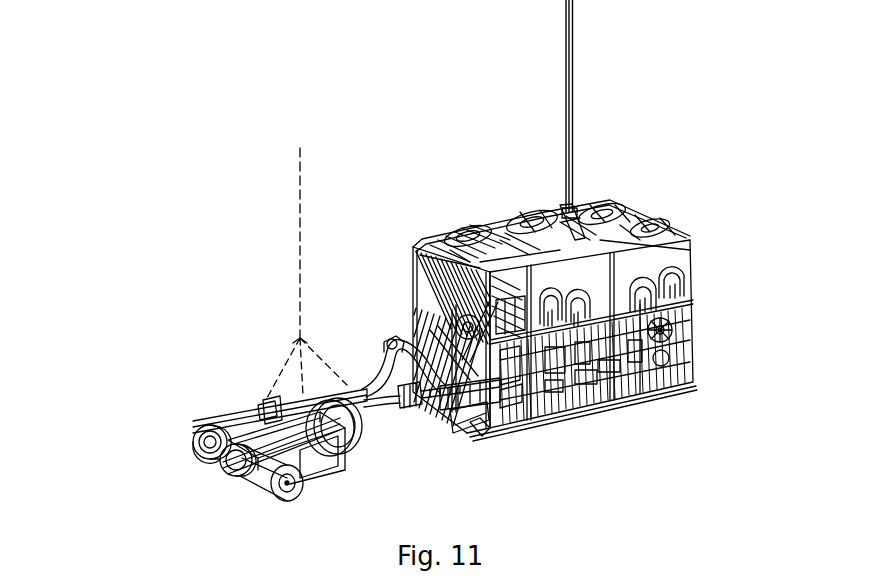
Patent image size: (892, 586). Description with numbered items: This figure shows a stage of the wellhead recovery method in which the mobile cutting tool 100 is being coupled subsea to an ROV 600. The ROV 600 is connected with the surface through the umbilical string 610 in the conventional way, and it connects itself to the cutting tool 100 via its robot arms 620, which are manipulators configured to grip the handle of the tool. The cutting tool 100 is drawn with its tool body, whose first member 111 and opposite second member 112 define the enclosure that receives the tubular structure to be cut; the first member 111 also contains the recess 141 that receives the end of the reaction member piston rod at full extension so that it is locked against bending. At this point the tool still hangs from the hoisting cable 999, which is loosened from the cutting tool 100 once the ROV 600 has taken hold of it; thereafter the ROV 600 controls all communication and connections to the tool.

The mobile cutting tool 100 is at (222, 445).
The first member 111 is at (183, 440).
The second member 112 is at (217, 465).
The recess 141 is at (205, 463).
The ROV 600 is at (647, 222).
The umbilical string 610 is at (571, 78).
The robot arms 620 is at (382, 350).
The hoisting cable 999 is at (300, 201).